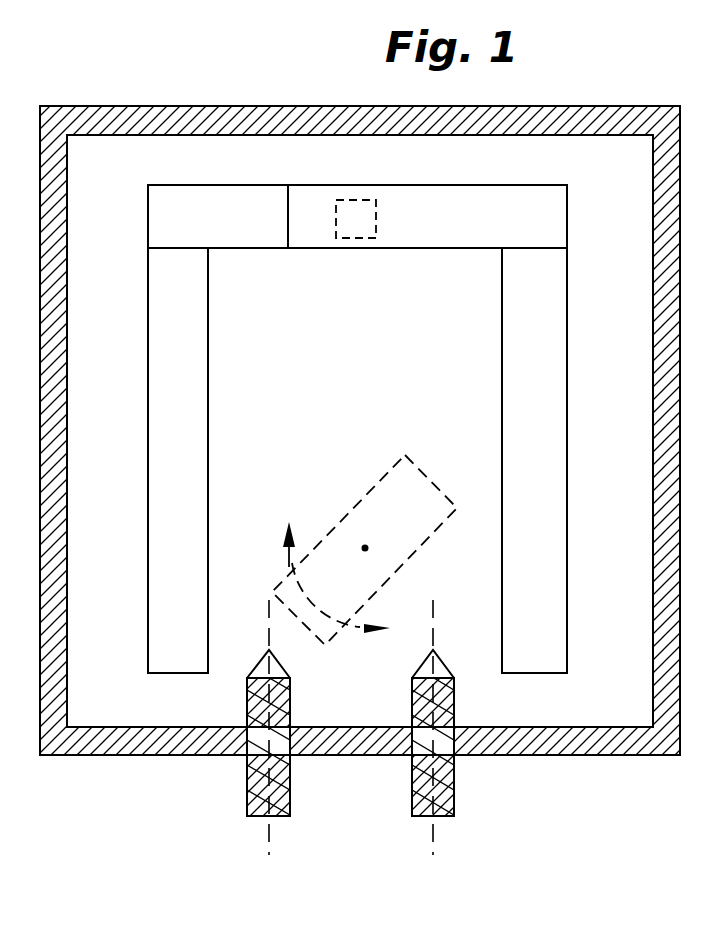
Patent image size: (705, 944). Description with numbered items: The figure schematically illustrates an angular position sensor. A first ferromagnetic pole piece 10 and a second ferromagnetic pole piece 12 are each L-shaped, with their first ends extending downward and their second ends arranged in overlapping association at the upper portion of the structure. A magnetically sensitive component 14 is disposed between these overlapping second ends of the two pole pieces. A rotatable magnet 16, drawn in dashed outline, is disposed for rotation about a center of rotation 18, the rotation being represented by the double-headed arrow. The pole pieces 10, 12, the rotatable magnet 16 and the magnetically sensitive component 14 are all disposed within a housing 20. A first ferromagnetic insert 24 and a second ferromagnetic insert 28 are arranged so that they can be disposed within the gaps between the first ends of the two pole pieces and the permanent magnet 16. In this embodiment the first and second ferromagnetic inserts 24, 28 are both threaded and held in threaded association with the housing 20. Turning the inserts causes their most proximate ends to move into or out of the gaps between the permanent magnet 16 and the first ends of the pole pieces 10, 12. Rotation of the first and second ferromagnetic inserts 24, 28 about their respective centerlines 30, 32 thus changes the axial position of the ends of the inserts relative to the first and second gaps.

The first ferromagnetic pole piece 10 is at (158, 363).
The second ferromagnetic pole piece 12 is at (563, 388).
The magnetically sensitive component 14 is at (355, 232).
The rotatable magnet 16 is at (397, 472).
The center of rotation 18 is at (365, 548).
The housing 20 is at (195, 117).
The first ferromagnetic insert 24 is at (255, 803).
The second ferromagnetic insert 28 is at (443, 790).
The centerline 30 is at (269, 838).
The centerline 32 is at (433, 838).